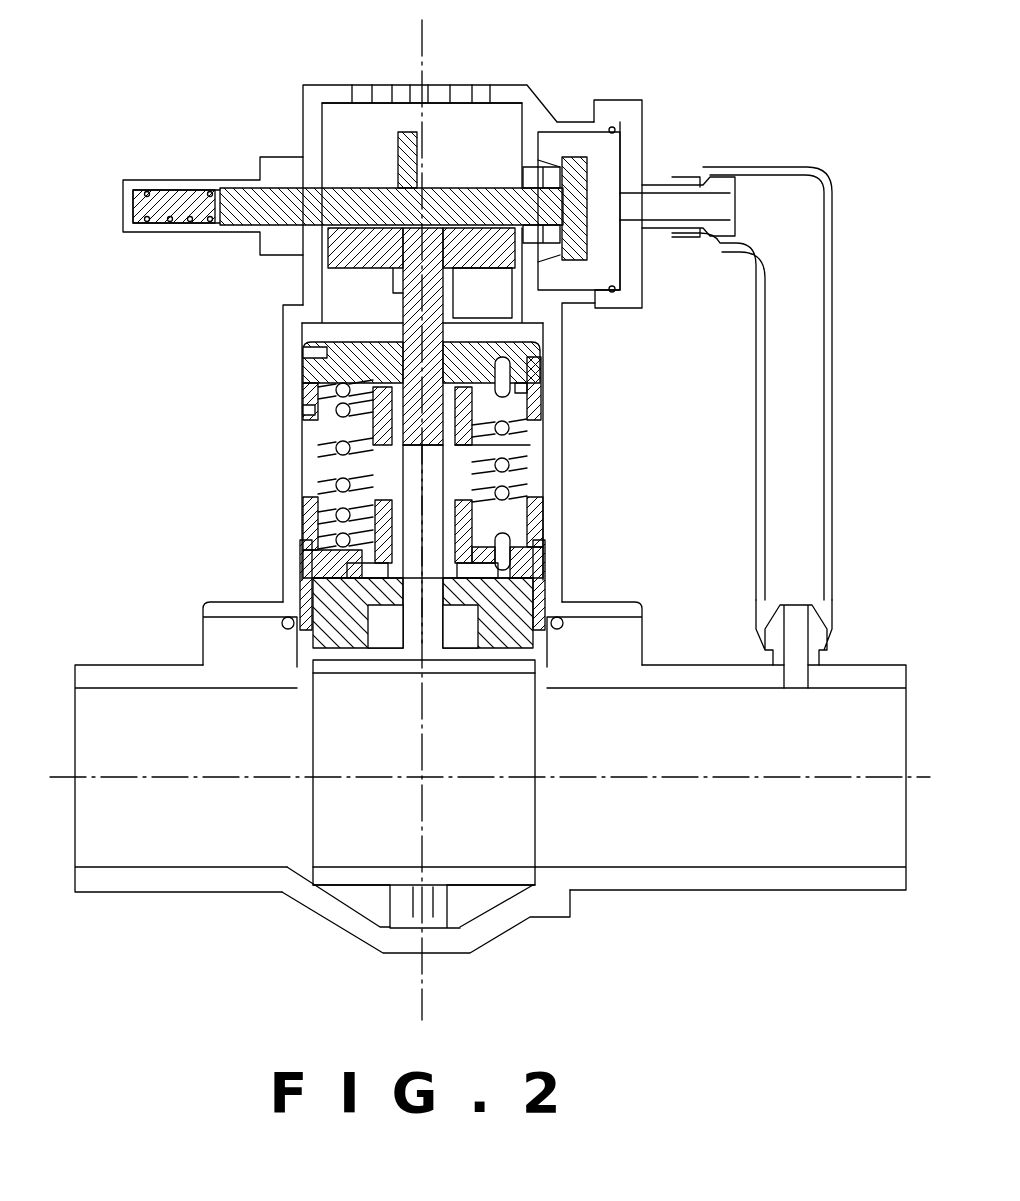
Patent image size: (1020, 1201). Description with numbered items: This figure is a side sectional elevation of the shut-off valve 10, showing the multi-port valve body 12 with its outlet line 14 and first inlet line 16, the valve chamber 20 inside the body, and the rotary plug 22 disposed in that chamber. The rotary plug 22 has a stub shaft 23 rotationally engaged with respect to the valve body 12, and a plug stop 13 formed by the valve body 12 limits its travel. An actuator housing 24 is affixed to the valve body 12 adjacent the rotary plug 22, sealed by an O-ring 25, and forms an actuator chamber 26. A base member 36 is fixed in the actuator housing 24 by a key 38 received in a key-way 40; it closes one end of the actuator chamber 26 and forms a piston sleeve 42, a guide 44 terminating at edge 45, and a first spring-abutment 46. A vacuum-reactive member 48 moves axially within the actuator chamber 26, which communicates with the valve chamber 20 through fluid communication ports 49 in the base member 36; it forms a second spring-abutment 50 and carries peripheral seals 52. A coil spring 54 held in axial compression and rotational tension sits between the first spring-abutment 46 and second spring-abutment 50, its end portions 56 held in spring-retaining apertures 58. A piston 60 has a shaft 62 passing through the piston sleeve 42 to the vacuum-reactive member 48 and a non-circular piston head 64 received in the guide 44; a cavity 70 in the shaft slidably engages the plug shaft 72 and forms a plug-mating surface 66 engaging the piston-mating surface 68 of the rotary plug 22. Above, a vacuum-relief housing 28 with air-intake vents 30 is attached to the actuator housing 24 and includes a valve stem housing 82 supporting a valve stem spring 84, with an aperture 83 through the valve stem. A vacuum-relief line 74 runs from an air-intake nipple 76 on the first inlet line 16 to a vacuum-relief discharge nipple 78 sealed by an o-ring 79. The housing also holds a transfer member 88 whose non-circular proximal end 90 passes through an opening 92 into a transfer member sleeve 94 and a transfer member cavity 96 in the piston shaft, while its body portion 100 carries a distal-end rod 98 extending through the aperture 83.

The shut-off valve 10 is at (666, 58).
The multi-port valve body 12 is at (508, 925).
The plug stop 13 is at (553, 880).
The outlet line 14 is at (88, 668).
The first inlet line 16 is at (830, 840).
The valve chamber 20 is at (406, 836).
The rotary plug 22 is at (535, 812).
The stub shaft 23 is at (412, 915).
The actuator housing 24 is at (300, 440).
The O-ring 25 is at (565, 626).
The actuator chamber 26 is at (304, 457).
The vacuum-relief housing 28 is at (303, 128).
The air-intake vents 30 is at (358, 97).
The base member 36 is at (540, 505).
The key 38 is at (292, 615).
The key-way 40 is at (296, 585).
The piston sleeve 42 is at (500, 485).
The guide 44 is at (540, 585).
The edge 45 is at (548, 638).
The first spring-abutment 46 is at (310, 510).
The vacuum-reactive member 48 is at (530, 345).
The fluid communication ports 49 is at (485, 552).
The second spring-abutment 50 is at (537, 395).
The seals 52 is at (303, 400).
The coil spring 54 is at (470, 430).
The end portions 56 is at (515, 365).
The spring-retaining apertures 58 is at (530, 412).
The piston 60 is at (385, 500).
The shaft 62 is at (520, 455).
The non-circular piston head 64 is at (502, 655).
The plug-mating surface 66 is at (423, 626).
The piston-mating surface 68 is at (349, 656).
The cavity 70 is at (405, 484).
The plug shaft 72 is at (432, 652).
The vacuum-relief line 74 is at (826, 436).
The air-intake nipple 76 is at (808, 620).
The vacuum-relief discharge nipple 78 is at (710, 182).
The o-ring 79 is at (614, 131).
The valve stem housing 82 is at (205, 232).
The aperture 83 is at (417, 188).
The valve stem spring 84 is at (172, 192).
The transfer member 88 is at (328, 262).
The non-circular proximal end 90 is at (328, 380).
The opening 92 is at (403, 320).
The transfer member sleeve 94 is at (310, 350).
The transfer member cavity 96 is at (322, 412).
The distal-end rod 98 is at (412, 142).
The body portion 100 is at (467, 266).